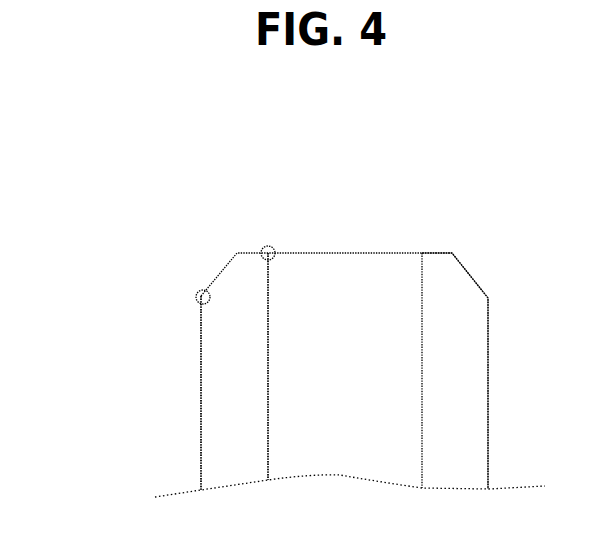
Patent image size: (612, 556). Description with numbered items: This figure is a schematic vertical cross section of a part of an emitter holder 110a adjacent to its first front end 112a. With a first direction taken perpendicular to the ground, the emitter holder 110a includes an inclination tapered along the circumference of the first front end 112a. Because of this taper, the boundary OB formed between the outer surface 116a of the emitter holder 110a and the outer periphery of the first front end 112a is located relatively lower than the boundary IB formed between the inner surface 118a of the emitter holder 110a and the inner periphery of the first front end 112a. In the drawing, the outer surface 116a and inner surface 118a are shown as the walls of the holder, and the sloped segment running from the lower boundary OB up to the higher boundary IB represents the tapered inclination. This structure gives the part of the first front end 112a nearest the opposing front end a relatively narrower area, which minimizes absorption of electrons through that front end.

The emitter holder 110a is at (157, 151).
The boundary IB is at (265, 247).
The boundary OB is at (200, 292).
The first front end 112a is at (427, 252).
The outer surface 116a is at (201, 378).
The inner surface 118a is at (269, 365).